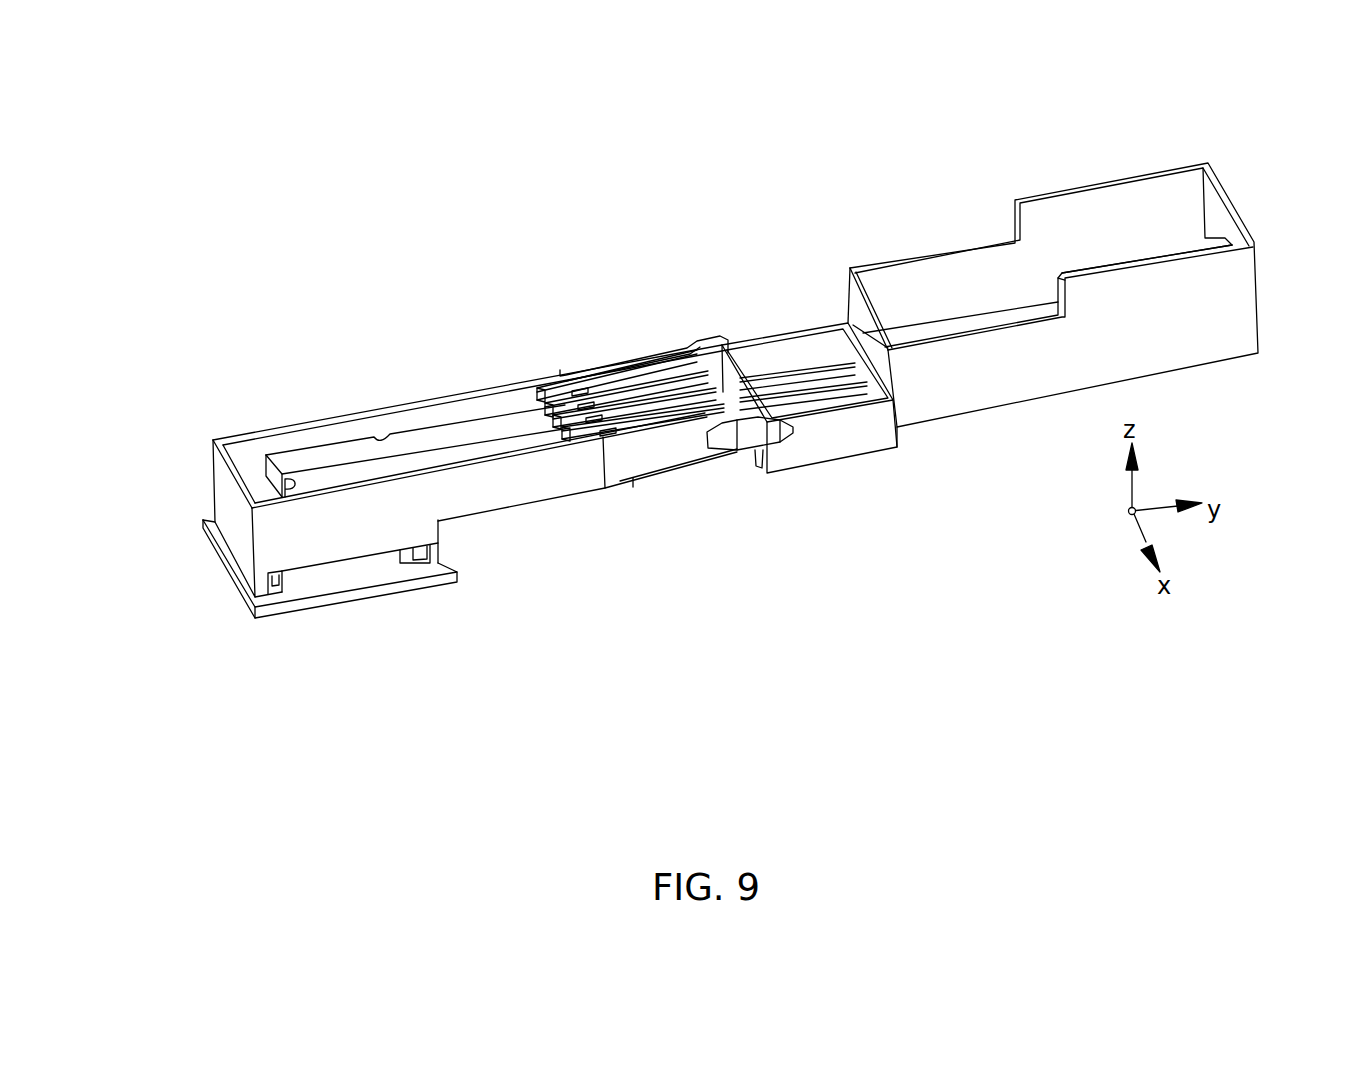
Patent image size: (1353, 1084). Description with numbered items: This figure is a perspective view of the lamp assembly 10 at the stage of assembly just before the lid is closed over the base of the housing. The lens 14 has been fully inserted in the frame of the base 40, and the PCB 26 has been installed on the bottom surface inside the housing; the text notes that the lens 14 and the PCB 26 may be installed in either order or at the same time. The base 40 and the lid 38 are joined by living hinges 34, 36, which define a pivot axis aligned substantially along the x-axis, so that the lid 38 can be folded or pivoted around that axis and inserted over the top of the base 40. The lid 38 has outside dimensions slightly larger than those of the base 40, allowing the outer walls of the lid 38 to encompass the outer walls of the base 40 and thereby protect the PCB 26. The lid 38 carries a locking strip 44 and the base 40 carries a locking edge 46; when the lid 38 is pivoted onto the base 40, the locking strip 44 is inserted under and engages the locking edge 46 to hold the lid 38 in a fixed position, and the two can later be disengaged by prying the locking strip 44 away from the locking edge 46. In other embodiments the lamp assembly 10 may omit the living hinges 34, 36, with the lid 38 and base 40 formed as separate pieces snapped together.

The lamp assembly 10 is at (793, 148).
The lens 14 is at (363, 575).
The PCB 26 is at (342, 452).
The living hinge 34 is at (753, 442).
The living hinge 36 is at (708, 337).
The lid 38 is at (1085, 182).
The base 40 is at (225, 487).
The locking strip 44 is at (1128, 262).
The locking edge 46 is at (303, 540).